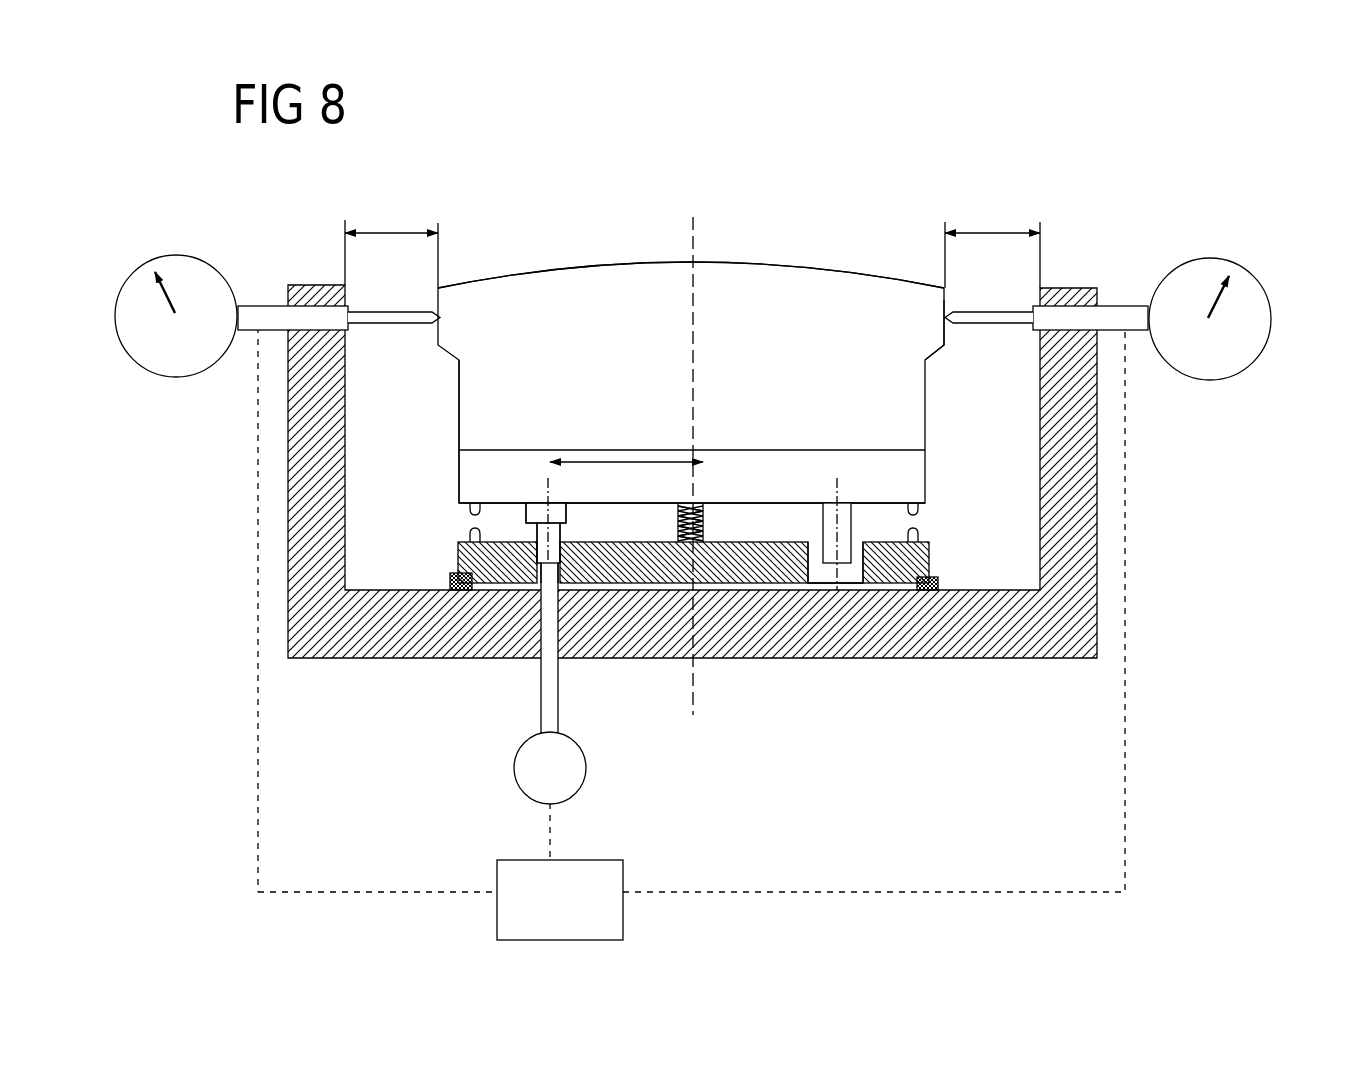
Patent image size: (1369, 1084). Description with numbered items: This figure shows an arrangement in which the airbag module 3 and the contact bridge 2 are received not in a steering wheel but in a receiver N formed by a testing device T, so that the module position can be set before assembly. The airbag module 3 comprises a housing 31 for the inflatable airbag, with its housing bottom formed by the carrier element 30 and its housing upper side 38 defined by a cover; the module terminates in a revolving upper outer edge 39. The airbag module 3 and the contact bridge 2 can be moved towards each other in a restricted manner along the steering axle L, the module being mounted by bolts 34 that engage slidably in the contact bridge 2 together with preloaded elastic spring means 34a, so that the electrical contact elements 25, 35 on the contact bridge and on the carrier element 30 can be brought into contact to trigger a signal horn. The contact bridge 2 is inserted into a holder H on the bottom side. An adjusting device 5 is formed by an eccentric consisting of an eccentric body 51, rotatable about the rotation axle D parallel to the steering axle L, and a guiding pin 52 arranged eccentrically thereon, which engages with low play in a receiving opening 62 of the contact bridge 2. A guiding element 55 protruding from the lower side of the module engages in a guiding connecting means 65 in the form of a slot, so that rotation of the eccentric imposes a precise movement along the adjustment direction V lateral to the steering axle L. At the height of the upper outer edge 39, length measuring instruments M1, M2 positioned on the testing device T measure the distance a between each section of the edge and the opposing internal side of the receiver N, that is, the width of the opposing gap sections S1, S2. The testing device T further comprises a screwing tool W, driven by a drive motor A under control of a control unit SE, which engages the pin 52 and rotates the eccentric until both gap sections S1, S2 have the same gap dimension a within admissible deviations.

The contact bridge 2 is at (455, 562).
The airbag module 3 is at (828, 260).
The adjusting device 5 is at (567, 513).
The electrical contact element 25 is at (467, 530).
The carrier element 30 is at (877, 503).
The housing 31 is at (456, 425).
The bolt 34 is at (706, 513).
The elastic spring means 34a is at (703, 528).
The electrical contact element 35 is at (467, 507).
The housing upper side 38 is at (618, 264).
The upper outer edge 39 is at (948, 302).
The eccentric body 51 is at (557, 502).
The guiding pin 52 is at (561, 536).
The guiding element 55 is at (830, 517).
The receiving opening 62 is at (565, 585).
The guiding connecting means 65 is at (852, 570).
The drive motor A is at (528, 778).
The rotation axle D is at (545, 483).
The holder H is at (450, 595).
The steering axle L is at (697, 334).
The length measuring instrument M1 is at (143, 343).
The length measuring instrument M2 is at (1270, 341).
The receiver N is at (352, 386).
The gap section S1 is at (422, 302).
The gap section S2 is at (1027, 300).
The control unit SE is at (517, 875).
The testing device T is at (1097, 442).
The adjustment direction V is at (643, 460).
The screwing tool W is at (540, 703).
The gap dimension a is at (692, 242).